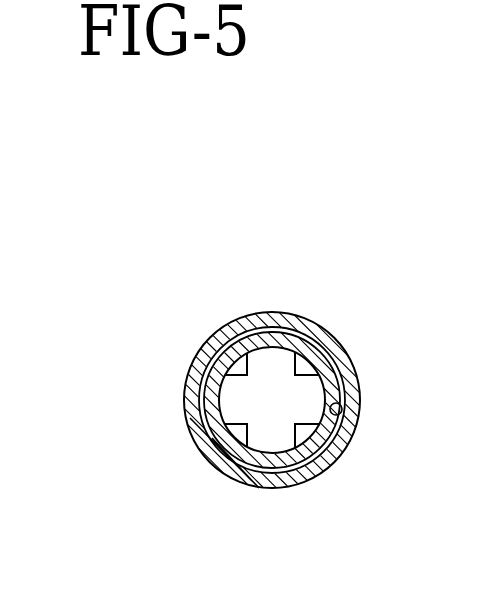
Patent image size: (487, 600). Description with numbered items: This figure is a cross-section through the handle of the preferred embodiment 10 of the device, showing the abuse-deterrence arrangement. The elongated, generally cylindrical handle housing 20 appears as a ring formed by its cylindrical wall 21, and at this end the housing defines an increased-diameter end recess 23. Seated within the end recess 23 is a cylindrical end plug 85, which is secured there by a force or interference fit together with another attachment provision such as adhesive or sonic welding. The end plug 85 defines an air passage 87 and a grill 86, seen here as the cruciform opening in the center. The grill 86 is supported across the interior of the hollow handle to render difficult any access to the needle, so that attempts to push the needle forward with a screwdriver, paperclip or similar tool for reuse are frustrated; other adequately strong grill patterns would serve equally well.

The preferred embodiment 10 is at (178, 205).
The handle housing 20 is at (293, 318).
The cylindrical wall 21 is at (343, 362).
The end recess 23 is at (352, 433).
The end plug 85 is at (293, 458).
The grill 86 is at (267, 395).
The air passage 87 is at (203, 458).